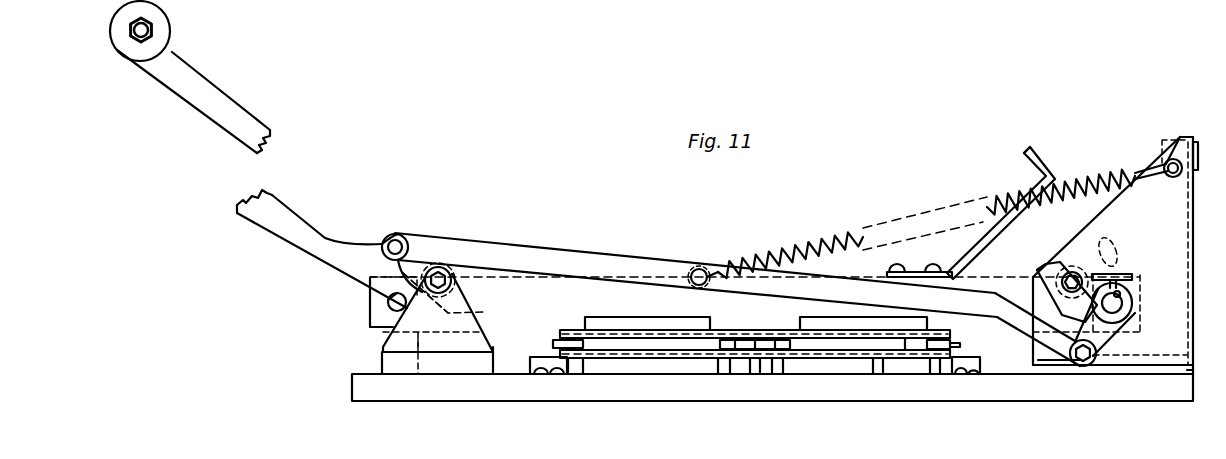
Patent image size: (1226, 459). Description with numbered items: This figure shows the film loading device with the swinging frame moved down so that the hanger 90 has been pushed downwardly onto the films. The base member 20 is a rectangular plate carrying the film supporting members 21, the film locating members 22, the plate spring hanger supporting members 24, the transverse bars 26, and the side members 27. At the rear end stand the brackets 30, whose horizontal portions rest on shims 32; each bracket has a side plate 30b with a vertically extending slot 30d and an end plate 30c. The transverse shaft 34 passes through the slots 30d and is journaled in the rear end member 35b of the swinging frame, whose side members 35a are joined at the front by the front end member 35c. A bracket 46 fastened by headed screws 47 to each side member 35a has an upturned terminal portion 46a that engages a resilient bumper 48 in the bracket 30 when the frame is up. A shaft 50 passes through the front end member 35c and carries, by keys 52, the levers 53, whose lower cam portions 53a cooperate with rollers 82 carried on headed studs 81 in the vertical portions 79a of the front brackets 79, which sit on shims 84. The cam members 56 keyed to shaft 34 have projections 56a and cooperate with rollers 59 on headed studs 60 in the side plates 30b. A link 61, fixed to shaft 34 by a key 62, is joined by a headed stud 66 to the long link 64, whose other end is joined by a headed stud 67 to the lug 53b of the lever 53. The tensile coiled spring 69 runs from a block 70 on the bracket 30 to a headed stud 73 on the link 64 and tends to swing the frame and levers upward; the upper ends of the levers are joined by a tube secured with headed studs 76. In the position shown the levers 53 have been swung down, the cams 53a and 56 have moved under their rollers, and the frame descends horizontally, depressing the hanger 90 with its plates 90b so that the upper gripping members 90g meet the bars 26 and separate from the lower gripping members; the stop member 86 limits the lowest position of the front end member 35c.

The base member 20 is at (356, 389).
The film supporting members 21 is at (723, 374).
The film locating members 22 is at (778, 374).
The hanger supporting members 24 is at (530, 362).
The transversely extending bars 26 is at (575, 374).
The members 27 is at (672, 320).
The brackets 30 is at (1127, 352).
The side plate 30b is at (1152, 165).
The end plate 30c is at (1113, 381).
The vertically extending slots 30d is at (1125, 273).
The spacing plates or shims 32 is at (1187, 370).
The shaft 34 is at (1123, 308).
The longitudinally extending side members 35a is at (555, 292).
The rear end member 35b is at (1140, 286).
The front end member 35c is at (370, 322).
The bracket 46 is at (977, 247).
The terminal portion 46a is at (1021, 152).
The headed screws 47 is at (937, 267).
The resilient blocks 48 is at (1164, 161).
The shaft 50 is at (390, 307).
The keys 52 is at (387, 296).
The levers 53 is at (270, 200).
The downwardly projecting portions 53a is at (458, 313).
The projections 53b is at (402, 238).
The cam members 56 is at (1033, 277).
The projections 56a is at (1117, 248).
The rollers 59 is at (1055, 267).
The headed studs 60 is at (1072, 271).
The link 61 is at (1102, 344).
The key 62 is at (1121, 294).
The long link 64 is at (622, 262).
The headed stud 66 is at (1084, 368).
The headed stud 67 is at (392, 234).
The tensile coiled spring 69 is at (795, 253).
The block 70 is at (1193, 186).
The headed stud 73 is at (698, 269).
The headed studs 76 is at (129, 34).
The brackets 79 is at (468, 340).
The vertical portions 79a is at (387, 333).
The headed studs 81 is at (457, 268).
The rollers 82 is at (452, 286).
The spacing plates or shims 84 is at (382, 365).
The stop member 86 is at (432, 346).
The film hanger 90 is at (609, 322).
The upper and lower plates 90b is at (908, 358).
The top gripping member 90g is at (772, 339).